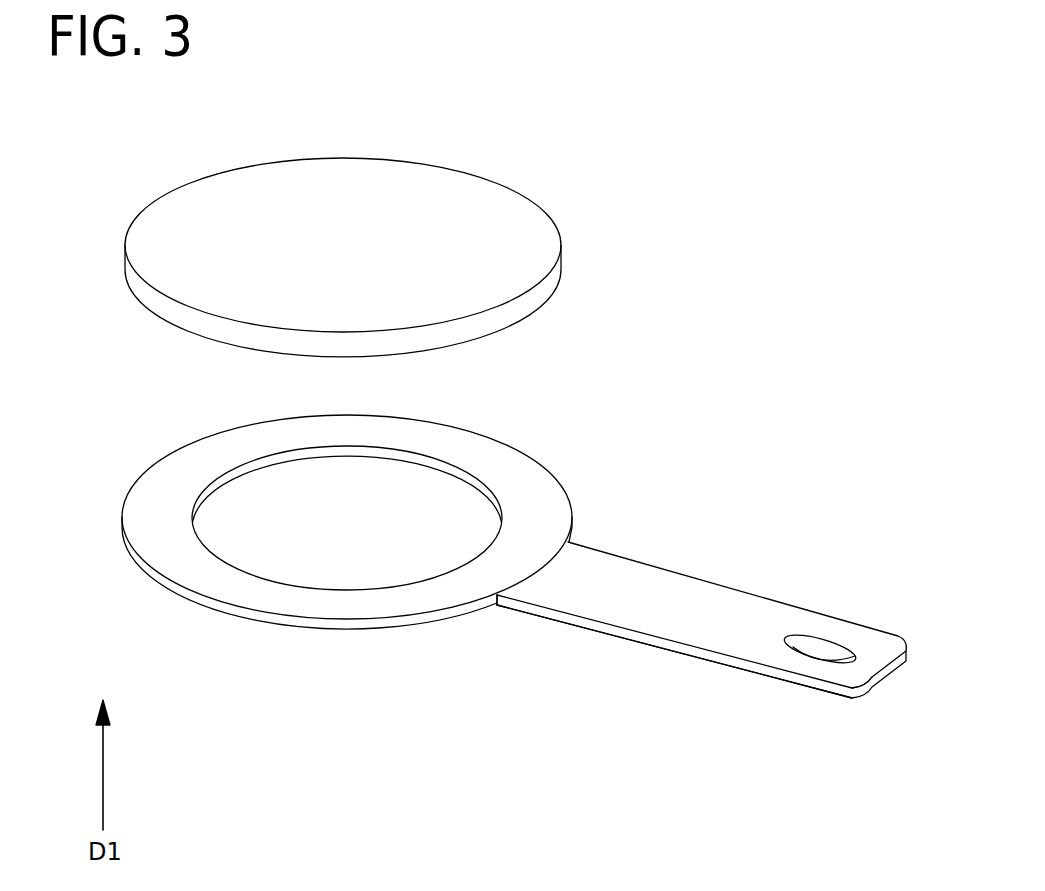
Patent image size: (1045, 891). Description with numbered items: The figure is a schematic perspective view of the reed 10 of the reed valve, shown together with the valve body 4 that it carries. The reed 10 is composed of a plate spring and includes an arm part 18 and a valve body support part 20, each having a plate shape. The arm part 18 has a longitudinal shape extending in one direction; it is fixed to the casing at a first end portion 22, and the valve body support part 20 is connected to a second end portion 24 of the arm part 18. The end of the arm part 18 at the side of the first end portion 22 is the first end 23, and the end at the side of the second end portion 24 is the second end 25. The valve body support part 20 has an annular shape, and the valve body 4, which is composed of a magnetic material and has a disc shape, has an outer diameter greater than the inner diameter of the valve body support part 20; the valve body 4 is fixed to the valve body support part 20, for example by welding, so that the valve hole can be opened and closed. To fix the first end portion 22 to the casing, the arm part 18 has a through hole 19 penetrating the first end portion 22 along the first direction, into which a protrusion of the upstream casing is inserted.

The valve body 4 is at (513, 188).
The reed 10 is at (525, 596).
The arm part 18 is at (672, 639).
The through hole 19 is at (825, 649).
The valve body support part 20 is at (545, 465).
The first end portion 22 is at (768, 698).
The first end 23 is at (875, 677).
The second end portion 24 is at (495, 622).
The second end 25 is at (531, 567).